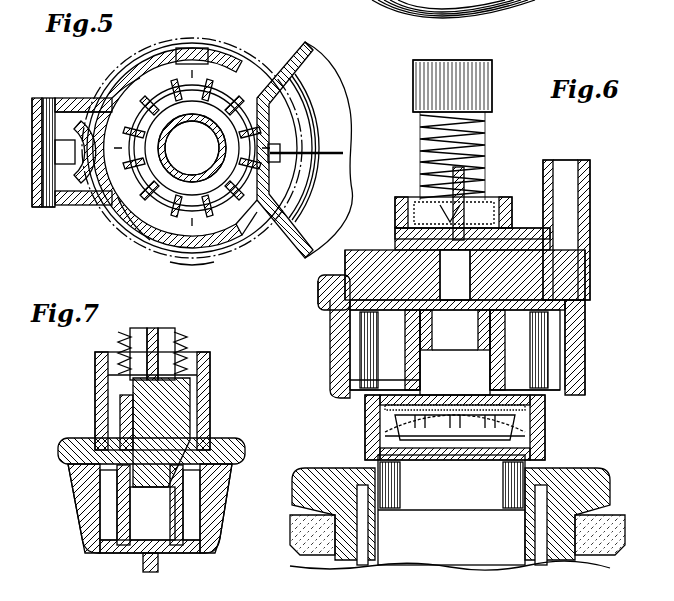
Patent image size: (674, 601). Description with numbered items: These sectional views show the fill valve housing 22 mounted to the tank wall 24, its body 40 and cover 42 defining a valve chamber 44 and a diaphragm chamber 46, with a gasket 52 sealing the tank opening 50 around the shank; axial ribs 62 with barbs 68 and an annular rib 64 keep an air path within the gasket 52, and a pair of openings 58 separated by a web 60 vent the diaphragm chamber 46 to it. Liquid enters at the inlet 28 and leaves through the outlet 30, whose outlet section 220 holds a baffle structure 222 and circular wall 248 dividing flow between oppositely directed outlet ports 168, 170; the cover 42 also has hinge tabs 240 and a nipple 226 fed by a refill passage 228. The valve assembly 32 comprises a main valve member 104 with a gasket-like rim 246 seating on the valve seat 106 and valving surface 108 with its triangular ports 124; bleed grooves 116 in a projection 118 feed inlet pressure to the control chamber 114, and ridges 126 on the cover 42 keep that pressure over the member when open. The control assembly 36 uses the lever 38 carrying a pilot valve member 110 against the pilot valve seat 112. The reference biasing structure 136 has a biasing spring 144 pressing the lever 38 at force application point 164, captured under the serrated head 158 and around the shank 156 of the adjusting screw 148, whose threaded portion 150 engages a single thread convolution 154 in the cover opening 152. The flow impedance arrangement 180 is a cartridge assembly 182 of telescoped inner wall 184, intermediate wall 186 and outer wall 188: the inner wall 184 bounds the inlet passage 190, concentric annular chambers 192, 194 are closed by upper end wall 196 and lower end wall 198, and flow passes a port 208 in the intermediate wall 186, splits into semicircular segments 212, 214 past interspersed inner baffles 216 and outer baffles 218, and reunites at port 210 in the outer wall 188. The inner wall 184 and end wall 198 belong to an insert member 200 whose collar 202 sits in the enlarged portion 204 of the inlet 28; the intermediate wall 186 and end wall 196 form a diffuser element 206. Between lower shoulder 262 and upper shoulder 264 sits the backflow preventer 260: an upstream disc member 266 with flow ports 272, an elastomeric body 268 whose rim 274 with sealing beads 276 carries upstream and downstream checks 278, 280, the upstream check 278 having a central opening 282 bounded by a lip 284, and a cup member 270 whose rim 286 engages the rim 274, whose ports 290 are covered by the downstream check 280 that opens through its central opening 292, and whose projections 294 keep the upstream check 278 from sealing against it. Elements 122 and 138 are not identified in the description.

In FIG. 5, the housing 22 is at (335, 84).
In FIG. 6, the housing 22 is at (312, 303).
In FIG. 7, the housing 22 is at (53, 445).
In FIG. 6, the tank wall 24 is at (605, 545).
In FIG. 6, the inlet 28 is at (433, 555).
In FIG. 5, the outlet 30 is at (34, 100).
In FIG. 7, the outlet 30 is at (74, 500).
In FIG. 6, the valve assembly 32 is at (516, 146).
In FIG. 6, the control assembly 36 is at (505, 98).
In FIG. 6, the control lever 38 is at (484, 205).
In FIG. 7, the control lever 38 is at (195, 354).
In FIG. 5, the body 40 is at (301, 42).
In FIG. 6, the body 40 is at (330, 306).
In FIG. 7, the body 40 is at (205, 556).
In FIG. 6, the cover 42 is at (320, 286).
In FIG. 7, the cover 42 is at (96, 364).
In FIG. 6, the valve chamber 44 is at (352, 262).
In FIG. 5, the diaphragm chamber 46 is at (312, 54).
In FIG. 6, the opening 50 is at (345, 567).
In FIG. 6, the gasket 52 is at (292, 502).
In FIG. 5, the openings 58 is at (280, 147).
In FIG. 5, the rib or web 60 is at (342, 128).
In FIG. 6, the axially extending ribs 62 is at (370, 546).
In FIG. 6, the annular rib 64 is at (540, 526).
In FIG. 6, the projections or barbs 68 is at (330, 556).
In FIG. 6, the main valve member 104 is at (585, 276).
In FIG. 6, the valve seat 106 is at (428, 292).
In FIG. 6, the valving surface 108 is at (420, 330).
In FIG. 6, the pilot valve member 110 is at (510, 205).
In FIG. 6, the pilot valve seat 112 is at (432, 206).
In FIG. 6, the valve control chamber 114 is at (512, 240).
In FIG. 6, the bleed passages or grooves 116 is at (478, 330).
In FIG. 6, the projection 118 is at (455, 290).
In FIG. 6, the cover plate 122 is at (412, 242).
In FIG. 6, the triangular ports 124 is at (420, 348).
In FIG. 6, the ridges or projections 126 is at (392, 250).
In FIG. 6, the reference biasing structure 136 is at (398, 69).
In FIG. 7, the reference biasing structure 136 is at (64, 350).
In FIG. 6, the cap wall 138 is at (400, 214).
In FIG. 6, the biasing spring 144 is at (487, 140).
In FIG. 7, the biasing spring 144 is at (120, 338).
In FIG. 6, the adjusting screw 148 is at (493, 68).
In FIG. 7, the adjusting screw 148 is at (152, 326).
In FIG. 7, the threaded portion 150 is at (136, 486).
In FIG. 7, the opening 152 is at (128, 414).
In FIG. 7, the single thread convolution 154 is at (182, 396).
In FIG. 6, the shank portion 156 is at (426, 128).
In FIG. 7, the shank portion 156 is at (162, 334).
In FIG. 6, the head 158 is at (440, 62).
In FIG. 6, the force application point 164 is at (478, 186).
In FIG. 7, the force application point 164 is at (205, 366).
In FIG. 5, the outlet port 168 is at (40, 98).
In FIG. 7, the outlet port 168 is at (216, 536).
In FIG. 5, the outlet port 170 is at (52, 208).
In FIG. 7, the outlet port 170 is at (82, 540).
In FIG. 5, the flow impedance arrangement 180 is at (215, 40).
In FIG. 6, the flow impedance arrangement 180 is at (305, 335).
In FIG. 5, the cartridge-like assembly 182 is at (165, 60).
In FIG. 6, the cartridge-like assembly 182 is at (585, 335).
In FIG. 5, the inner wall 184 is at (192, 148).
In FIG. 6, the inner wall 184 is at (420, 365).
In FIG. 5, the intermediate wall 186 is at (124, 148).
In FIG. 6, the intermediate wall 186 is at (380, 345).
In FIG. 5, the outer wall 188 is at (160, 248).
In FIG. 6, the outer wall 188 is at (560, 356).
In FIG. 5, the inlet passage 190 is at (192, 148).
In FIG. 6, the inlet passage 190 is at (490, 355).
In FIG. 5, the inner annular chamber 192 is at (185, 250).
In FIG. 6, the inner annular chamber 192 is at (560, 375).
In FIG. 5, the outer annular chamber 194 is at (150, 235).
In FIG. 6, the outer annular chamber 194 is at (352, 330).
In FIG. 6, the upper end wall 196 is at (348, 282).
In FIG. 5, the lower end wall 198 is at (132, 90).
In FIG. 6, the lower end wall 198 is at (555, 396).
In FIG. 5, the insert member 200 is at (255, 105).
In FIG. 6, the insert member 200 is at (420, 380).
In FIG. 5, the collar 202 is at (262, 186).
In FIG. 6, the collar 202 is at (348, 396).
In FIG. 5, the enlarged diameter portion 204 is at (262, 172).
In FIG. 6, the enlarged diameter portion 204 is at (352, 378).
In FIG. 5, the diffuser element 206 is at (136, 158).
In FIG. 6, the diffuser element 206 is at (585, 290).
In FIG. 7, the diffuser element 206 is at (210, 426).
In FIG. 5, the port 208 is at (258, 140).
In FIG. 5, the port 210 is at (96, 100).
In FIG. 5, the flow path segment 212 is at (192, 46).
In FIG. 6, the flow path segment 212 is at (585, 386).
In FIG. 5, the flow path segment 214 is at (200, 255).
In FIG. 6, the flow path segment 214 is at (360, 350).
In FIG. 5, the inner baffles 216 is at (154, 96).
In FIG. 6, the inner baffles 216 is at (552, 332).
In FIG. 5, the outer baffles 218 is at (240, 72).
In FIG. 6, the outer baffles 218 is at (585, 346).
In FIG. 5, the outlet section 220 is at (36, 207).
In FIG. 7, the outlet section 220 is at (76, 520).
In FIG. 5, the baffle structure 222 is at (76, 98).
In FIG. 6, the nipple 226 is at (585, 151).
In FIG. 6, the refill passage 228 is at (575, 268).
In FIG. 7, the tabs 240 is at (85, 478).
In FIG. 6, the gasket-like rim portion 246 is at (565, 262).
In FIG. 5, the circular wall 248 is at (76, 205).
In FIG. 7, the circular wall 248 is at (132, 548).
In FIG. 6, the backflow preventer 260 is at (600, 438).
In FIG. 6, the lower shoulder 262 is at (370, 456).
In FIG. 6, the upper shoulder 264 is at (365, 425).
In FIG. 6, the upstream disc member 266 is at (445, 462).
In FIG. 6, the elastomeric body 268 is at (362, 410).
In FIG. 6, the cup member 270 is at (545, 410).
In FIG. 6, the upstream flow ports 272 is at (388, 480).
In FIG. 6, the rim portion 274 is at (365, 445).
In FIG. 6, the sealing beads 276 is at (545, 426).
In FIG. 6, the upstream check member 278 is at (420, 475).
In FIG. 6, the downstream check member 280 is at (470, 406).
In FIG. 6, the central opening 282 is at (451, 493).
In FIG. 6, the lip 284 is at (480, 462).
In FIG. 6, the rim portion 286 is at (545, 440).
In FIG. 6, the ports 290 is at (500, 460).
In FIG. 6, the central opening 292 is at (420, 400).
In FIG. 6, the projections 294 is at (460, 460).